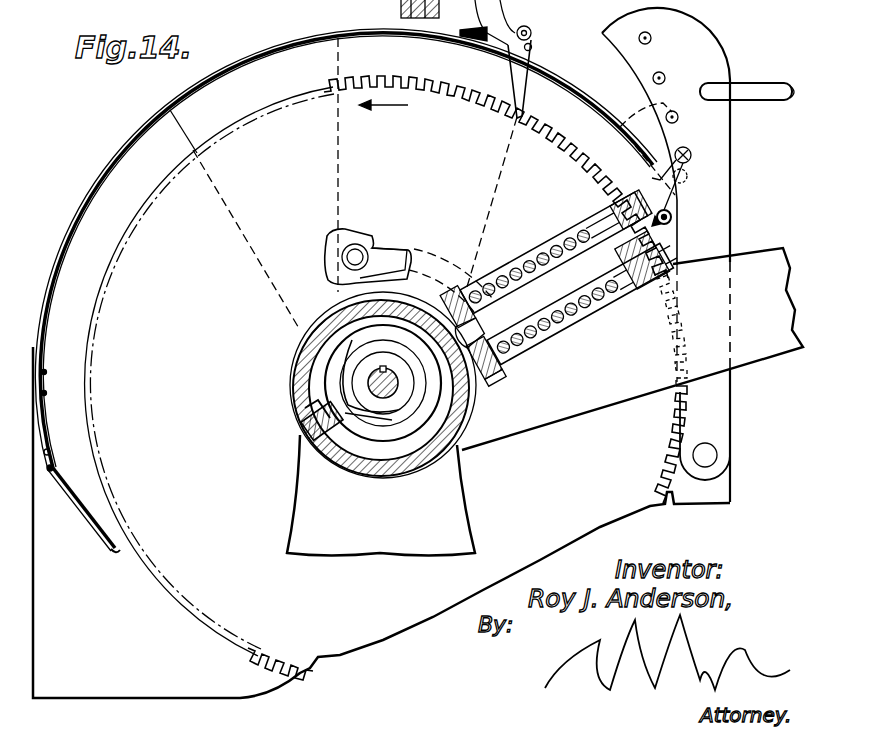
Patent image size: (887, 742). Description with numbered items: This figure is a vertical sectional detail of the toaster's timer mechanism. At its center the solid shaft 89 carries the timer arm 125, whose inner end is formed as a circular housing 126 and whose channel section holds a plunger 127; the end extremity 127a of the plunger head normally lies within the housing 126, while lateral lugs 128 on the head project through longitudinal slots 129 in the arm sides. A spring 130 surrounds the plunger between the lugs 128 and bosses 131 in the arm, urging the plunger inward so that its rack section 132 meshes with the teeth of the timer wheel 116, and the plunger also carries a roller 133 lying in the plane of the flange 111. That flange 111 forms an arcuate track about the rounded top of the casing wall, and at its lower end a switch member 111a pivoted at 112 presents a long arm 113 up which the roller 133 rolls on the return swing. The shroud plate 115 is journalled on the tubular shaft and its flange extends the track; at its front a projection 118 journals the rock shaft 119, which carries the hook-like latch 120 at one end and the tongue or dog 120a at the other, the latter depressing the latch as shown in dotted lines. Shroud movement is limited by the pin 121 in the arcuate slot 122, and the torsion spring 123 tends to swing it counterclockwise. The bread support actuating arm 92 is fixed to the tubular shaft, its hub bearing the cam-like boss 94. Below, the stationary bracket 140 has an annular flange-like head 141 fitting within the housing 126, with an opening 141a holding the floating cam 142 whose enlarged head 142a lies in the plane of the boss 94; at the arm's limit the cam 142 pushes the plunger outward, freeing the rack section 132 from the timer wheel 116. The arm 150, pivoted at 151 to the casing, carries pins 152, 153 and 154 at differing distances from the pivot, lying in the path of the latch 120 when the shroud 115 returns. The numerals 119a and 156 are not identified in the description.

The solid shaft 89 is at (384, 400).
The bread support actuating arm 92 is at (766, 352).
The cam-like boss 94 is at (360, 412).
The flange 111 is at (158, 113).
The switch member 111a is at (70, 495).
The pivot 112 is at (52, 466).
The long arm 113 is at (102, 533).
The shroud plate 115 is at (193, 120).
The timer wheel 116 is at (200, 607).
The projection 118 is at (513, 50).
The rock shaft 119 is at (49, 450).
The rivets 119a is at (45, 405).
The hook-like latch 120 is at (490, 13).
The tongue or dog 120a is at (532, 47).
The pin 121 is at (370, 240).
The arcuate slot 122 is at (405, 247).
The torsion spring 123 is at (335, 278).
The timer arm 125 is at (538, 242).
The circular housing 126 is at (295, 348).
The plunger 127 is at (532, 343).
The end extremity 127a is at (482, 385).
The lateral lugs 128 is at (468, 295).
The longitudinal slots 129 is at (465, 318).
The spring 130 is at (566, 312).
The bosses 131 is at (618, 292).
The rack section 132 is at (632, 259).
The roller 133 is at (672, 217).
The stationary bracket 140 is at (293, 508).
The annular flange-like head 141 is at (320, 392).
The opening 141a is at (318, 420).
The floating cam 142 is at (308, 445).
The enlarged head 142a is at (312, 380).
The arm 150 is at (720, 238).
The pivot 151 is at (708, 455).
The pin 152 is at (650, 35).
The pin 153 is at (661, 72).
The pin 154 is at (676, 111).
The rod 156 is at (785, 83).